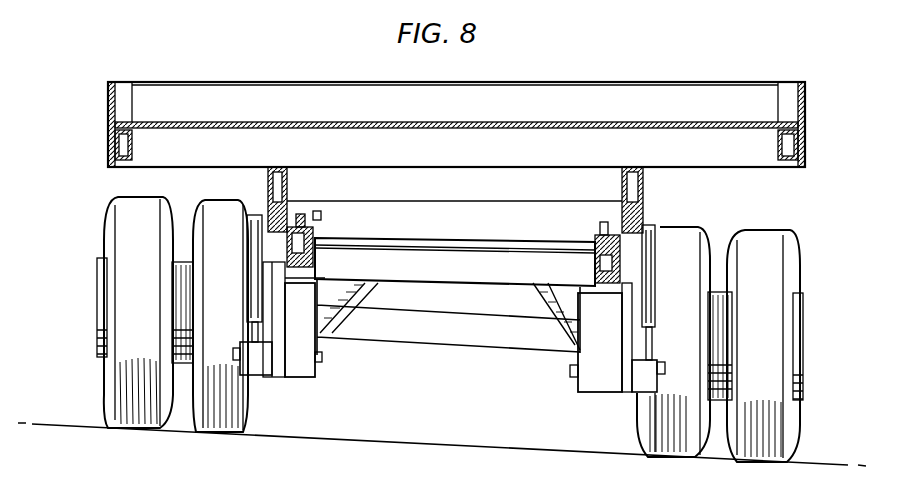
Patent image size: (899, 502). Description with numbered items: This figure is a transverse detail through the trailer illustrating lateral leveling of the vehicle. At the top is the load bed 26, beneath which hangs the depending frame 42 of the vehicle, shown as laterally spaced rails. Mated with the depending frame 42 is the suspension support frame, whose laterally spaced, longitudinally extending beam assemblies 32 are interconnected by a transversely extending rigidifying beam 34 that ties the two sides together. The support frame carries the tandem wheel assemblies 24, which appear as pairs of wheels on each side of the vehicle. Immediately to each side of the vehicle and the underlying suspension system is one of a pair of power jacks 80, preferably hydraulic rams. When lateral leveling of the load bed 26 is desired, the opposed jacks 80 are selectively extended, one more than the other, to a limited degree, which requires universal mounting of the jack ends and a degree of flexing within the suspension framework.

The wheel assemblies 24 is at (98, 219).
The load bed 26 is at (600, 125).
The beam assemblies 32 is at (312, 229).
The rigidifying beams 34 is at (440, 265).
The depending frame 42 is at (648, 190).
The power jacks 80 is at (664, 244).